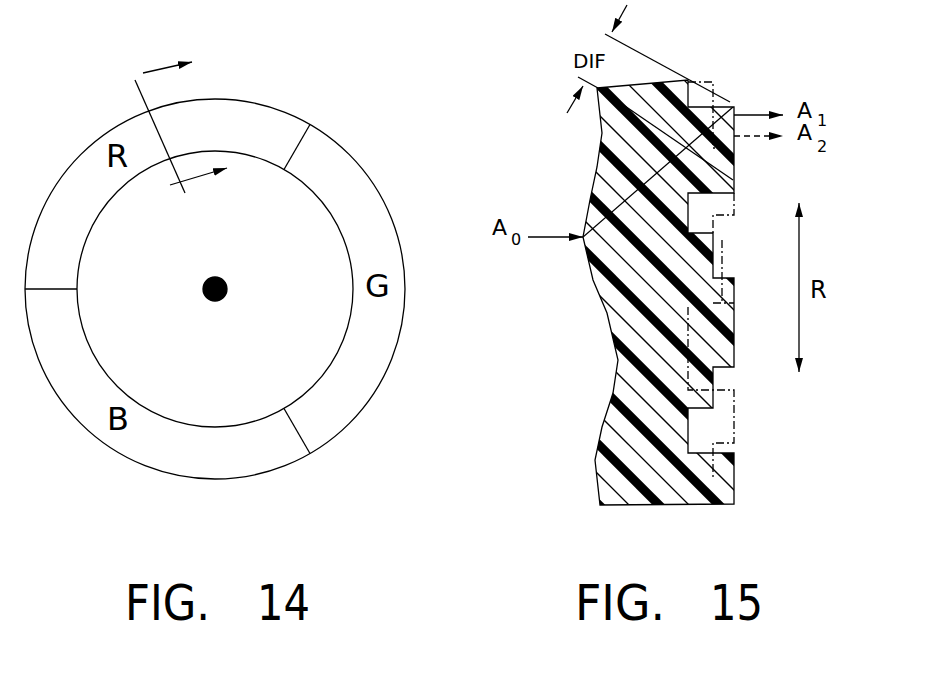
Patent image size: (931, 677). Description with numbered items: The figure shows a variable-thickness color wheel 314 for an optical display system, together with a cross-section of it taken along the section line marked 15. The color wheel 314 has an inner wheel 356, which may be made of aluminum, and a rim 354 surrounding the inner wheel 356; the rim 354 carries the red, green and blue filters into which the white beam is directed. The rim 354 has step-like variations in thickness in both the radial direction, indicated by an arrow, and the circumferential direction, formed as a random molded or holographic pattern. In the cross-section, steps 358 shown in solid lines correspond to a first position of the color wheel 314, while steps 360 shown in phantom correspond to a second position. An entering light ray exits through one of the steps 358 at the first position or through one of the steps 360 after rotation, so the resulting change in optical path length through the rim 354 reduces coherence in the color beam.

In FIG. 14, the section line for FIG. 15 is at (164, 137).
In FIG. 14, the variable-thickness color wheel 314 is at (349, 423).
In FIG. 14, the rim 354 is at (333, 138).
In FIG. 15, the rim 354 is at (642, 507).
In FIG. 14, the inner wheel 356 is at (238, 372).
In FIG. 15, the steps 358 is at (737, 477).
In FIG. 15, the steps 360 is at (737, 411).